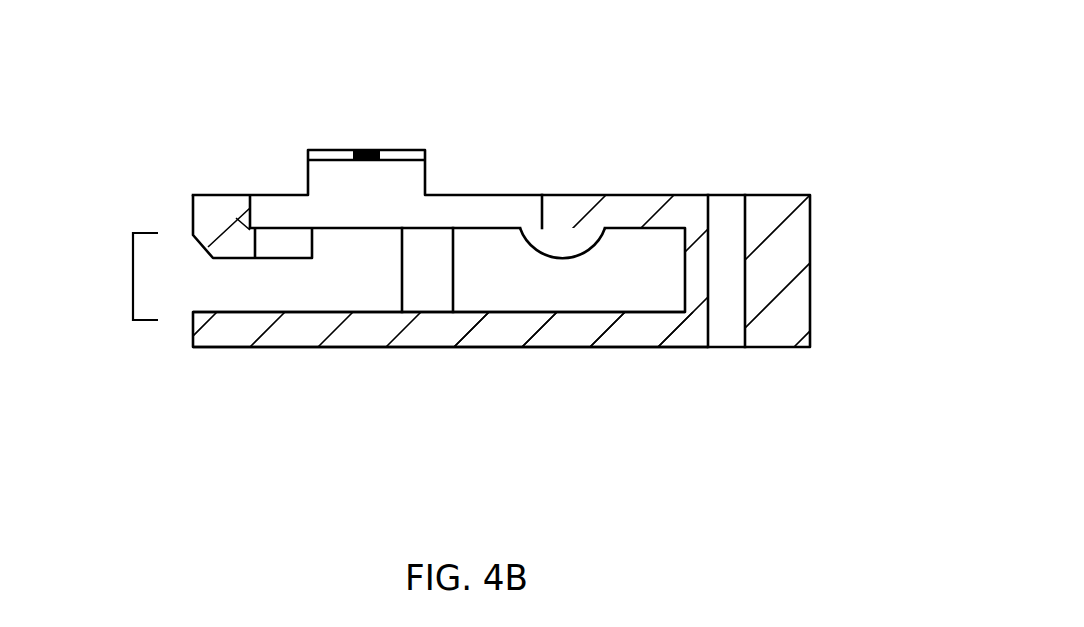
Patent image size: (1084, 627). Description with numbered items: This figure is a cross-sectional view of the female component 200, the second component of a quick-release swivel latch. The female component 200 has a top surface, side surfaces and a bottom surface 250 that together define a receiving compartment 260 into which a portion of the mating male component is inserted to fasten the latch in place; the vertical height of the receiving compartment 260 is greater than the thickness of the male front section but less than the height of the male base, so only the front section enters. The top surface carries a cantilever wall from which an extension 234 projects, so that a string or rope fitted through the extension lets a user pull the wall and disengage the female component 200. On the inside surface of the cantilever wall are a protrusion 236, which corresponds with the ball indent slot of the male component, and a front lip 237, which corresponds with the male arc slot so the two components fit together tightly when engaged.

The female component 200 is at (537, 232).
The extension 234 is at (378, 149).
The protrusion 236 is at (558, 225).
The front lip 237 is at (245, 238).
The bottom surface 250 is at (502, 325).
The receiving compartment 260 is at (133, 280).